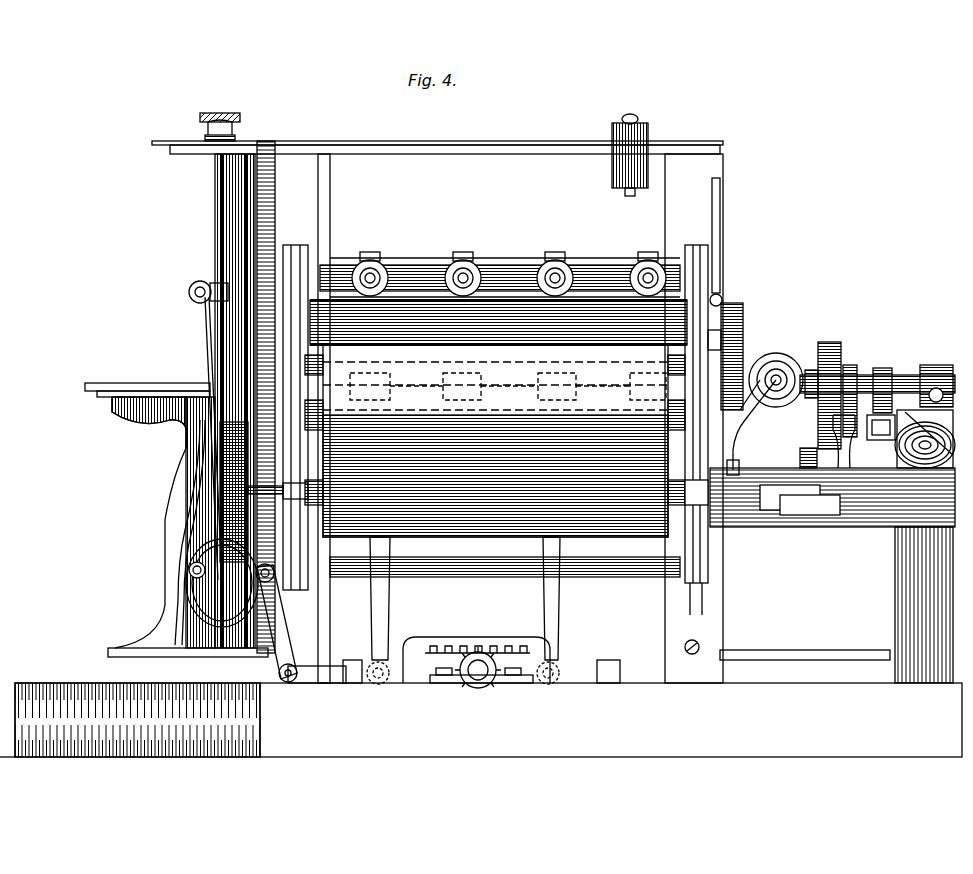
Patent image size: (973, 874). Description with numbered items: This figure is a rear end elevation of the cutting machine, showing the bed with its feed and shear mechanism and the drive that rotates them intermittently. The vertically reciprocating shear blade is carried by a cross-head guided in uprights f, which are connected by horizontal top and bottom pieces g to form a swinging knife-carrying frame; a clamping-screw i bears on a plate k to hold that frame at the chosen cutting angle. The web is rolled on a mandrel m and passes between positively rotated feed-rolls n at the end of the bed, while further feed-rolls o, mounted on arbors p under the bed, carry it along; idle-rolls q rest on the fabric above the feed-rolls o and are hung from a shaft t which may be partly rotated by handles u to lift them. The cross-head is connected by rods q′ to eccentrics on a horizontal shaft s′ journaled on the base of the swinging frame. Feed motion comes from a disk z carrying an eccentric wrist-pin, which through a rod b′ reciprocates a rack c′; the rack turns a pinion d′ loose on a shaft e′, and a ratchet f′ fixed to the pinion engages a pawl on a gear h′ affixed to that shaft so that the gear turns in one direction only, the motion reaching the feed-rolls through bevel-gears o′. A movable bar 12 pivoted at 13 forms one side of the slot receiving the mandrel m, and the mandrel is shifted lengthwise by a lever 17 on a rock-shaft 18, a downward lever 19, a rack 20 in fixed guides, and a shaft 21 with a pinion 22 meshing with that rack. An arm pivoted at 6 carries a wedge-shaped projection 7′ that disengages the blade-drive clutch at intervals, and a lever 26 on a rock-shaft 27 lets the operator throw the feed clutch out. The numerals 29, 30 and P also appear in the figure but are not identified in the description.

The pivot 6 is at (146, 390).
The wedge-shaped projection 7′ is at (222, 583).
The movable bar 12 is at (712, 306).
The pivot 13 is at (285, 340).
The lever 17 is at (278, 490).
The rock-shaft 18 is at (275, 573).
The lever 19 is at (282, 608).
The rack 20 is at (473, 645).
The shaft 21 is at (445, 680).
The pinion 22 is at (484, 680).
The lever 26 is at (384, 598).
The rock-shaft 27 is at (372, 662).
The column 29 is at (556, 598).
The roller 30 is at (560, 662).
The uprights f is at (215, 196).
The top and bottom pieces g is at (492, 148).
The clamping-screw i is at (240, 128).
The plate k is at (270, 150).
The mandrel m is at (218, 480).
The feed-rolls n is at (630, 115).
The feed-rolls o is at (508, 386).
The arbors p is at (424, 386).
The idle-rolls q is at (498, 322).
The rods q′ is at (208, 335).
The horizontal shaft s′ is at (189, 568).
The shaft t is at (416, 277).
The handles u is at (722, 232).
The disk z is at (800, 458).
The crank P is at (755, 362).
The bevel-gears o′ is at (790, 362).
The gear h′ is at (835, 368).
The ratchet f′ is at (853, 372).
The pinion d′ is at (888, 370).
The shaft e′ is at (935, 385).
The rod b′ is at (840, 450).
The rack c′ is at (886, 440).